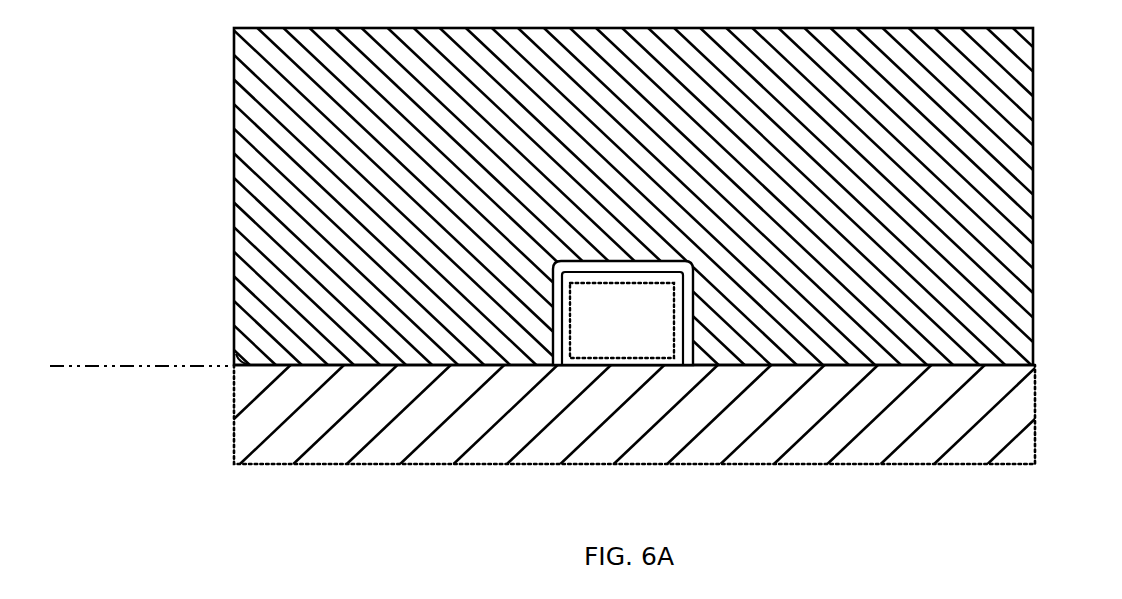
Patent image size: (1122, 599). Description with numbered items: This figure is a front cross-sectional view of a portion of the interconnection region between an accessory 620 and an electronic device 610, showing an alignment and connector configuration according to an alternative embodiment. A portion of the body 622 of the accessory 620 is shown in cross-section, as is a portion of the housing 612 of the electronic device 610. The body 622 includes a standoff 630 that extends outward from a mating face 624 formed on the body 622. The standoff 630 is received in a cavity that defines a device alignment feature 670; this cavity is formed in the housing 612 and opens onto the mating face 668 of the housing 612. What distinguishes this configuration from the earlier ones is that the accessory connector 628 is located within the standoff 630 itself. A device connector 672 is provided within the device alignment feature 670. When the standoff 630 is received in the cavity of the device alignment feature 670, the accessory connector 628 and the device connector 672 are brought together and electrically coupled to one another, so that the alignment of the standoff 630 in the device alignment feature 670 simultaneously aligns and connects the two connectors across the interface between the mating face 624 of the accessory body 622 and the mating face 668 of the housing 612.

The electronic device 610 is at (125, 332).
The housing 612 is at (1017, 98).
The accessory 620 is at (589, 426).
The body 622 is at (1012, 440).
The mating face 624 is at (998, 366).
The accessory connector 628 is at (603, 335).
The standoff 630 is at (609, 386).
The mating face 668 is at (234, 355).
The device alignment feature 670 is at (623, 313).
The device connector 672 is at (690, 366).